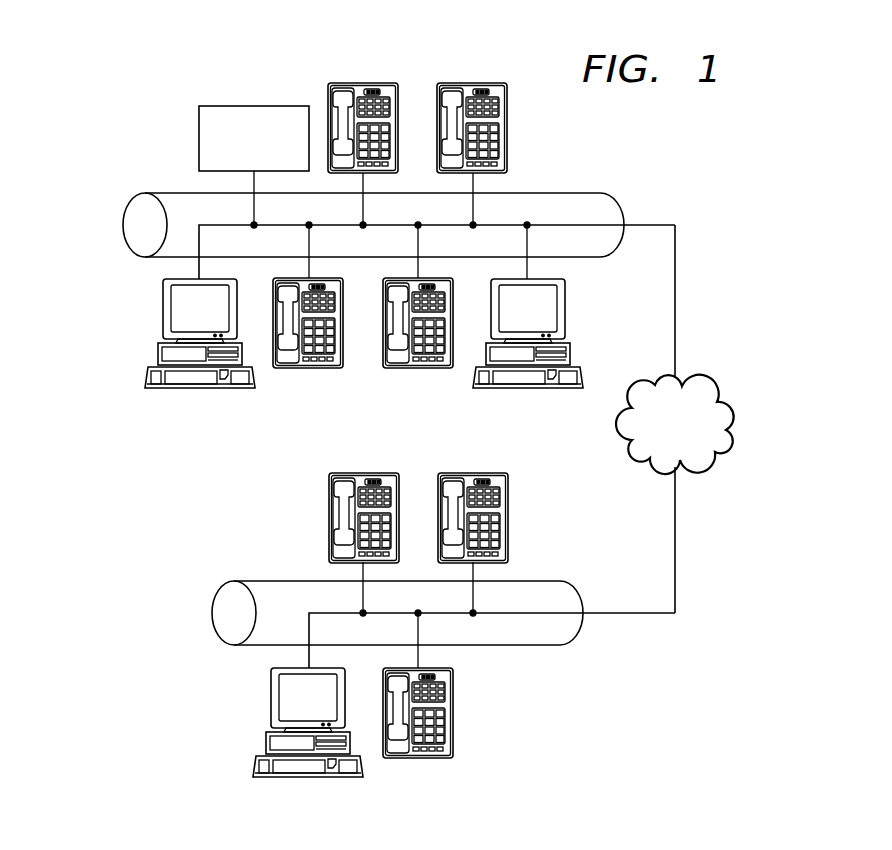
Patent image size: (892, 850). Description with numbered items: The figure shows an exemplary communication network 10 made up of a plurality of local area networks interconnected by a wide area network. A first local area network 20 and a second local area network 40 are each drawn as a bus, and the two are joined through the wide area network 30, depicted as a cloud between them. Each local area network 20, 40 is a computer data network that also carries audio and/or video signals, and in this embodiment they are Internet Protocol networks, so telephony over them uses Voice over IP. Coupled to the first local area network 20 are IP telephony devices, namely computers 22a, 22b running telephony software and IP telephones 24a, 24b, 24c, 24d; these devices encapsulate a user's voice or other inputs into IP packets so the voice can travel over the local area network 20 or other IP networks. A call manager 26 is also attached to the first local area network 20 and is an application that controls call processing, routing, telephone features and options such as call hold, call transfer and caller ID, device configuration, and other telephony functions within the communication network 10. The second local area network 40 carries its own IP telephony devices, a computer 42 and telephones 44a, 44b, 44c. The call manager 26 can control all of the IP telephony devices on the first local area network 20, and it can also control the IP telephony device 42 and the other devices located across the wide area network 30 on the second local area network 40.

The communication network 10 is at (107, 566).
The local area network 20 is at (571, 165).
The computer 22a is at (200, 389).
The computer 22b is at (527, 389).
The telephone 24a is at (305, 368).
The telephone 24b is at (420, 368).
The telephone 24c is at (362, 83).
The telephone 24d is at (472, 83).
The call manager 26 is at (254, 106).
The wide area network 30 is at (735, 433).
The local area network 40 is at (550, 670).
The IP telephony device 42 is at (273, 698).
The telephone 44a is at (453, 712).
The telephone 44b is at (329, 518).
The telephone 44c is at (508, 518).